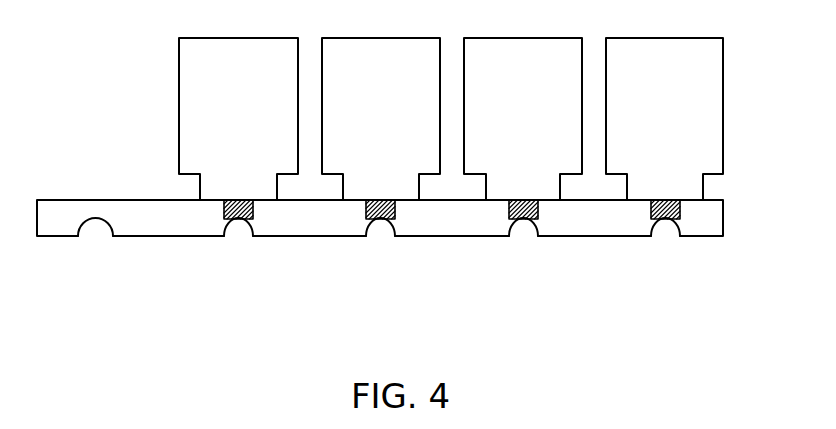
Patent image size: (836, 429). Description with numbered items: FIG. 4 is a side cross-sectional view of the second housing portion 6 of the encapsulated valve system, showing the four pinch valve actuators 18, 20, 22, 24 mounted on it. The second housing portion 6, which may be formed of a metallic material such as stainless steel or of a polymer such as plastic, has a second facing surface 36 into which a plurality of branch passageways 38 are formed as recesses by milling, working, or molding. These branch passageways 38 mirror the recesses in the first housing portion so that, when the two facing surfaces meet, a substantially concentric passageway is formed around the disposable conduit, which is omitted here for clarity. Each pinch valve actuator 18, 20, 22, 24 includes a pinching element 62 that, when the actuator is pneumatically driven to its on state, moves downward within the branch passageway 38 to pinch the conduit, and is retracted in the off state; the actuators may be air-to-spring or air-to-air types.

The second housing portion 6 is at (717, 222).
The pinch valve actuator 18 is at (675, 44).
The pinch valve actuator 20 is at (514, 44).
The pinch valve actuator 22 is at (380, 44).
The pinch valve actuator 24 is at (237, 44).
The second facing surface 36 is at (56, 237).
The branch passageways 38 is at (93, 230).
The pinching element 62 is at (253, 219).